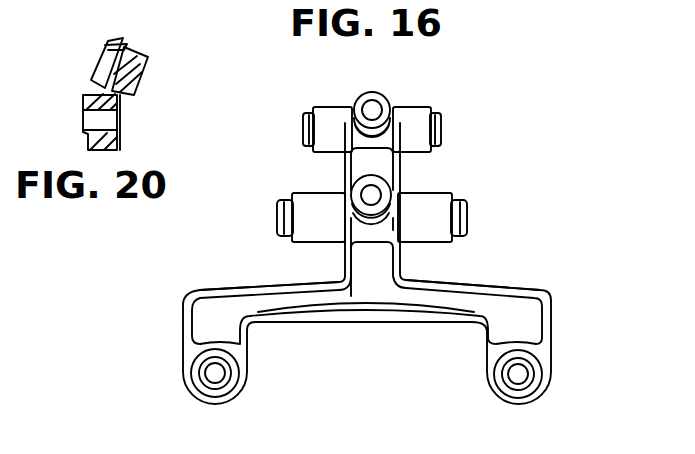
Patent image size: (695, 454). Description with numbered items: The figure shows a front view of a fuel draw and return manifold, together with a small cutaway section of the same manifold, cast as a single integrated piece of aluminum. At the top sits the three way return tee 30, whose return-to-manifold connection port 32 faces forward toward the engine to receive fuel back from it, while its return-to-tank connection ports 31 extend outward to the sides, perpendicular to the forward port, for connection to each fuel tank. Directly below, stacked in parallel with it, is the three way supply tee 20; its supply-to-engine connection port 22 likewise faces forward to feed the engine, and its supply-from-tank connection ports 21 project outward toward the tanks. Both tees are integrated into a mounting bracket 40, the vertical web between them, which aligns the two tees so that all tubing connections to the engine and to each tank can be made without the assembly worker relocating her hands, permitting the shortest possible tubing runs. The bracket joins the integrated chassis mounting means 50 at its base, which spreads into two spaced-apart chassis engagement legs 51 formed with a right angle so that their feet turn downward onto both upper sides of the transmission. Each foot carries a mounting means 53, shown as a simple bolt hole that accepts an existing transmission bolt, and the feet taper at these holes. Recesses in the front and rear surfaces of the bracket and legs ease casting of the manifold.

The three way supply tee 20 is at (399, 194).
The supply-from-tank connection port 21 is at (300, 194).
The supply-to-engine connection port 22 is at (385, 219).
The three way return tee 30 is at (329, 108).
The return-to-tank connection port 31 is at (417, 107).
The return-to-manifold connection port 32 is at (373, 95).
The mounting bracket 40 is at (346, 177).
The integrated chassis mounting means 50 is at (397, 311).
The chassis engagement legs 51 is at (197, 293).
The mounting means 53 is at (215, 375).